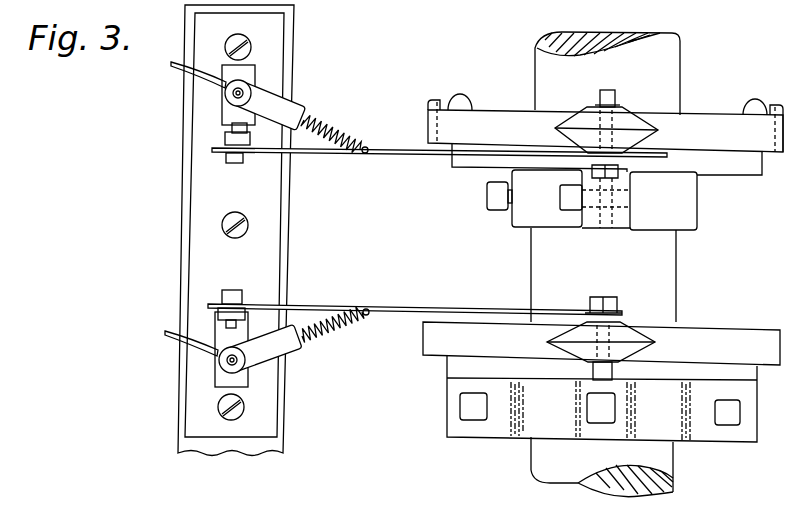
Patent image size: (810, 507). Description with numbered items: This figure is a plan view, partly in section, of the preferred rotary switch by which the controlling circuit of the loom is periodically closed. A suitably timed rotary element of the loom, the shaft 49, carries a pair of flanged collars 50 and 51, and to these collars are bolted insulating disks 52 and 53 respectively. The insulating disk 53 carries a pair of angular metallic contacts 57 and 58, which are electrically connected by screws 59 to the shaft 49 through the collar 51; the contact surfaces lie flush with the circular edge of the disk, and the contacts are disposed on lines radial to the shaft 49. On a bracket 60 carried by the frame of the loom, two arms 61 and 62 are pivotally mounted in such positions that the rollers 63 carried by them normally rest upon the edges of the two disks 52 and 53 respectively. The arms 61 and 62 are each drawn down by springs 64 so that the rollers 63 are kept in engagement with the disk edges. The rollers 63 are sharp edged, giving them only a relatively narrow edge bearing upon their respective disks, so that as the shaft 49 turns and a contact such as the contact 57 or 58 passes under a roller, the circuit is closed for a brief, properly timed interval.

The shaft 49 is at (686, 268).
The flanged collar 50 is at (502, 426).
The flanged collar 51 is at (712, 170).
The insulating disk 52 is at (731, 333).
The insulating disk 53 is at (707, 122).
The angular contact 57 is at (434, 100).
The angular contact 58 is at (773, 105).
The screw 59 is at (466, 95).
The bracket 60 is at (192, 225).
The arm 61 is at (418, 154).
The arm 62 is at (425, 308).
The roller 63 is at (632, 120).
The spring 64 is at (338, 140).